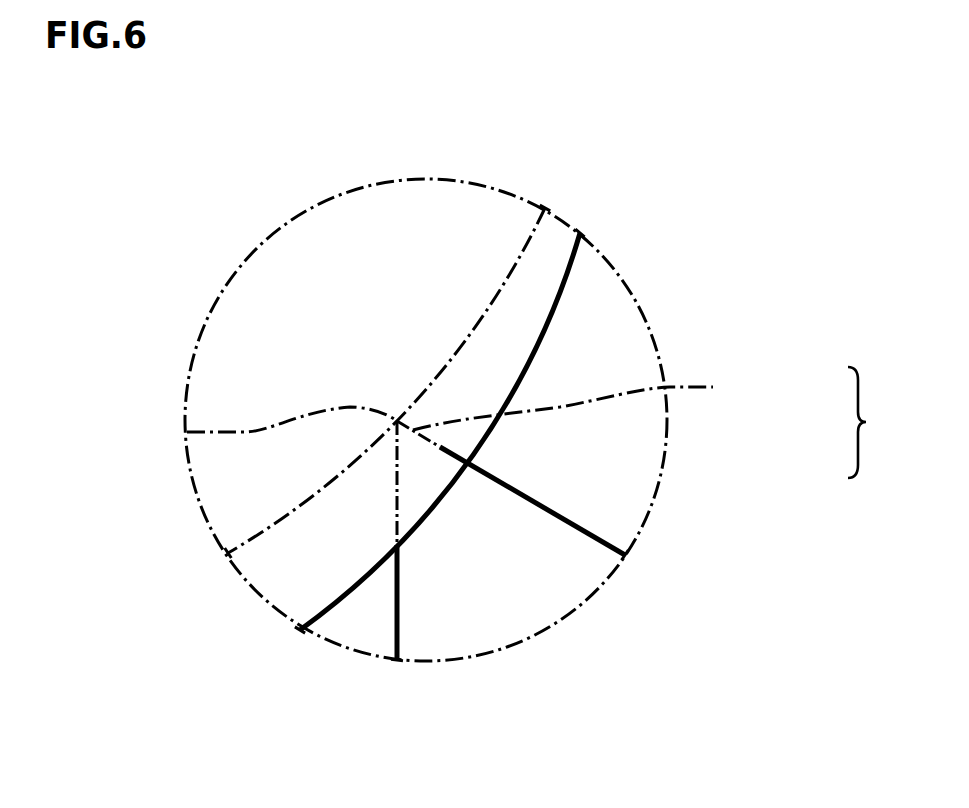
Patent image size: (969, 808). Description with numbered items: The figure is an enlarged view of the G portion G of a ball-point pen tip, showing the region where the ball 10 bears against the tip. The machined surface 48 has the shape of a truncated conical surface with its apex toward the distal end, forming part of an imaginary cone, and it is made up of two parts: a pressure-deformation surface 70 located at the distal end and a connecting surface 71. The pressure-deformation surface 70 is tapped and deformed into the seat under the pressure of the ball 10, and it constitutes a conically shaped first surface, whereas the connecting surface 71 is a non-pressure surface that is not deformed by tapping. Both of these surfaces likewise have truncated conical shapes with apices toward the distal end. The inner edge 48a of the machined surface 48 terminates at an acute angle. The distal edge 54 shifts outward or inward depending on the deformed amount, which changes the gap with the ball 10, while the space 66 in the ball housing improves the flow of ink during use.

The G portion G is at (325, 202).
The ball 10 is at (250, 307).
The inner edge 48a is at (187, 432).
The machined surface 48 is at (875, 422).
The pressure-deformation surface 70 is at (621, 394).
The connecting surface 71 is at (558, 514).
The space 66 is at (417, 484).
The distal edge 54 is at (473, 461).